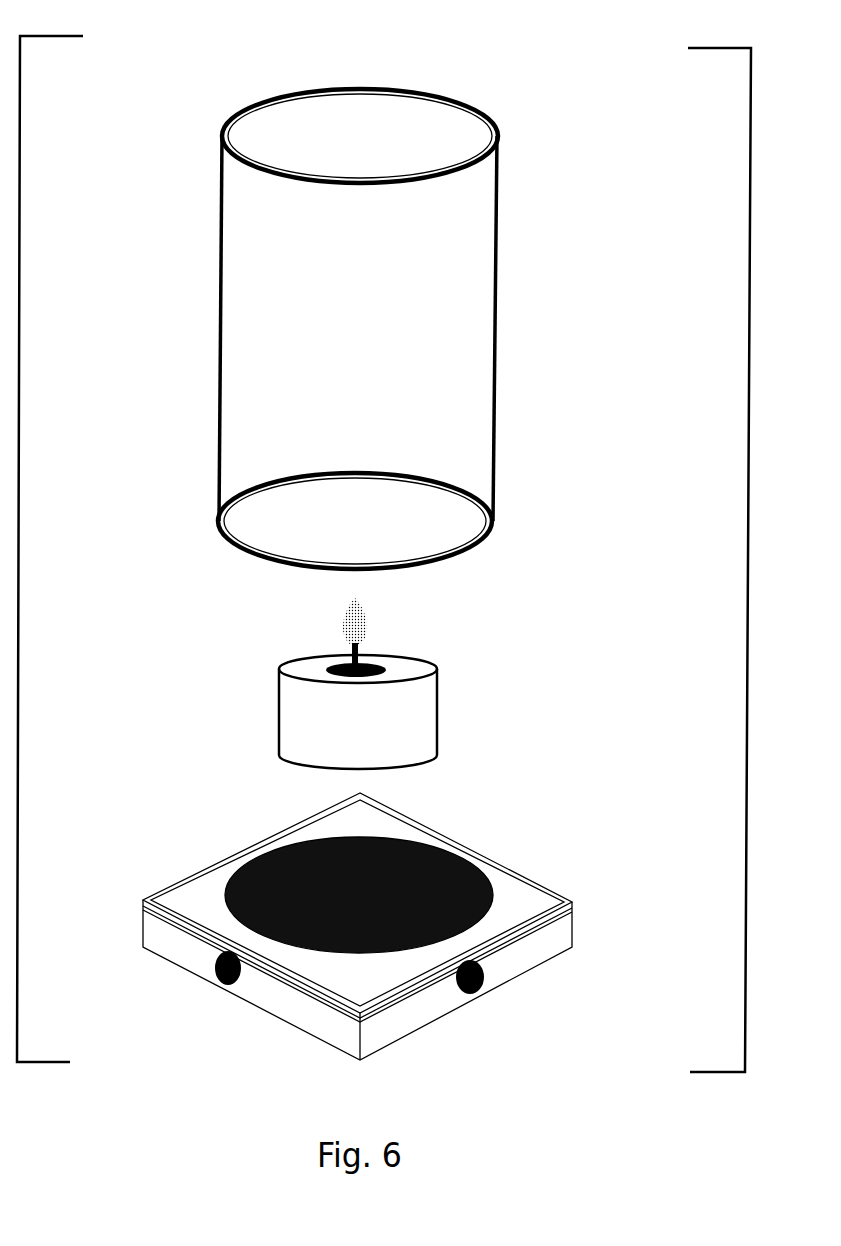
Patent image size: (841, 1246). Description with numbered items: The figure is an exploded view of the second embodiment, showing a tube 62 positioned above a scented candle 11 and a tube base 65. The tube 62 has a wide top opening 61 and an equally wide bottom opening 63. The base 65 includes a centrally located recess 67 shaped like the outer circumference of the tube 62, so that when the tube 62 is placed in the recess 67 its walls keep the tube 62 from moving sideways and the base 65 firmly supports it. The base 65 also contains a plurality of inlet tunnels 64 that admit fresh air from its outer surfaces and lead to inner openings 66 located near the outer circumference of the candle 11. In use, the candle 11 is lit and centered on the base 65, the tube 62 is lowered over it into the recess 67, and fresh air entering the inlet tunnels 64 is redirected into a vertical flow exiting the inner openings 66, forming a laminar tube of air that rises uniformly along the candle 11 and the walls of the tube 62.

The scented candle 11 is at (436, 725).
The top opening 61 is at (390, 128).
The tube 62 is at (462, 292).
The bottom opening 63 is at (390, 535).
The inlet tunnels 64 is at (483, 980).
The tube base 65 is at (575, 925).
The inner openings 66 is at (482, 875).
The recess 67 is at (232, 876).